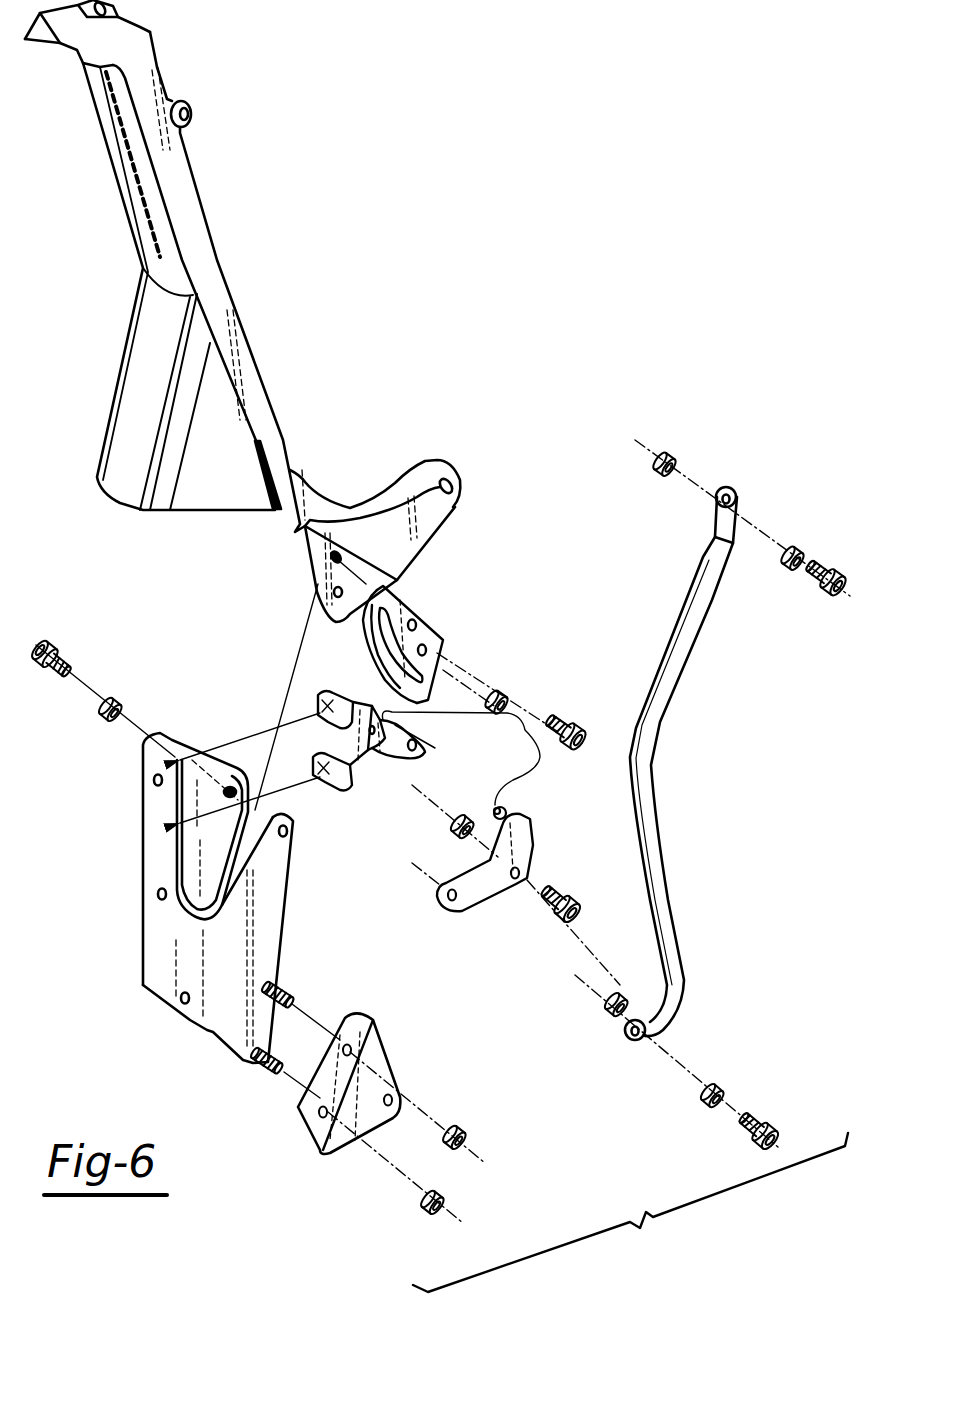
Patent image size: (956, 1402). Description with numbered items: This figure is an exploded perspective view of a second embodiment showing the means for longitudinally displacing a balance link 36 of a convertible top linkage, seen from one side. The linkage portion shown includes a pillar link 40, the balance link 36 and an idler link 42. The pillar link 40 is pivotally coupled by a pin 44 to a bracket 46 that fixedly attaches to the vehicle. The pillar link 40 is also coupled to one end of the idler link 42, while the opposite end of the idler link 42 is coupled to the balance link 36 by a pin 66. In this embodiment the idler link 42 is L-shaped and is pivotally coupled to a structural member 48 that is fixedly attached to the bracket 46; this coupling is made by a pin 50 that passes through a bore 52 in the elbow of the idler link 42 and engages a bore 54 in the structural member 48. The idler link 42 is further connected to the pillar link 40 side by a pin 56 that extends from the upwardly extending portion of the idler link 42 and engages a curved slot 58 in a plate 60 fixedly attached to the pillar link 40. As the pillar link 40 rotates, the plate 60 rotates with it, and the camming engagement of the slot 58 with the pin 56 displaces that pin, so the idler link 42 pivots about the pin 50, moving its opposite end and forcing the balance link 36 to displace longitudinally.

The balance link 36 is at (667, 712).
The pillar link 40 is at (262, 393).
The idler link 42 is at (533, 843).
The pin 44 is at (67, 650).
The bracket 46 is at (154, 920).
The structural member 48 is at (352, 775).
The pin 50 is at (567, 902).
The bore 52 is at (533, 880).
The bore 54 is at (378, 772).
The pin 56 is at (510, 817).
The curved slot 58 is at (395, 611).
The plate 60 is at (442, 637).
The pin 66 is at (763, 1118).